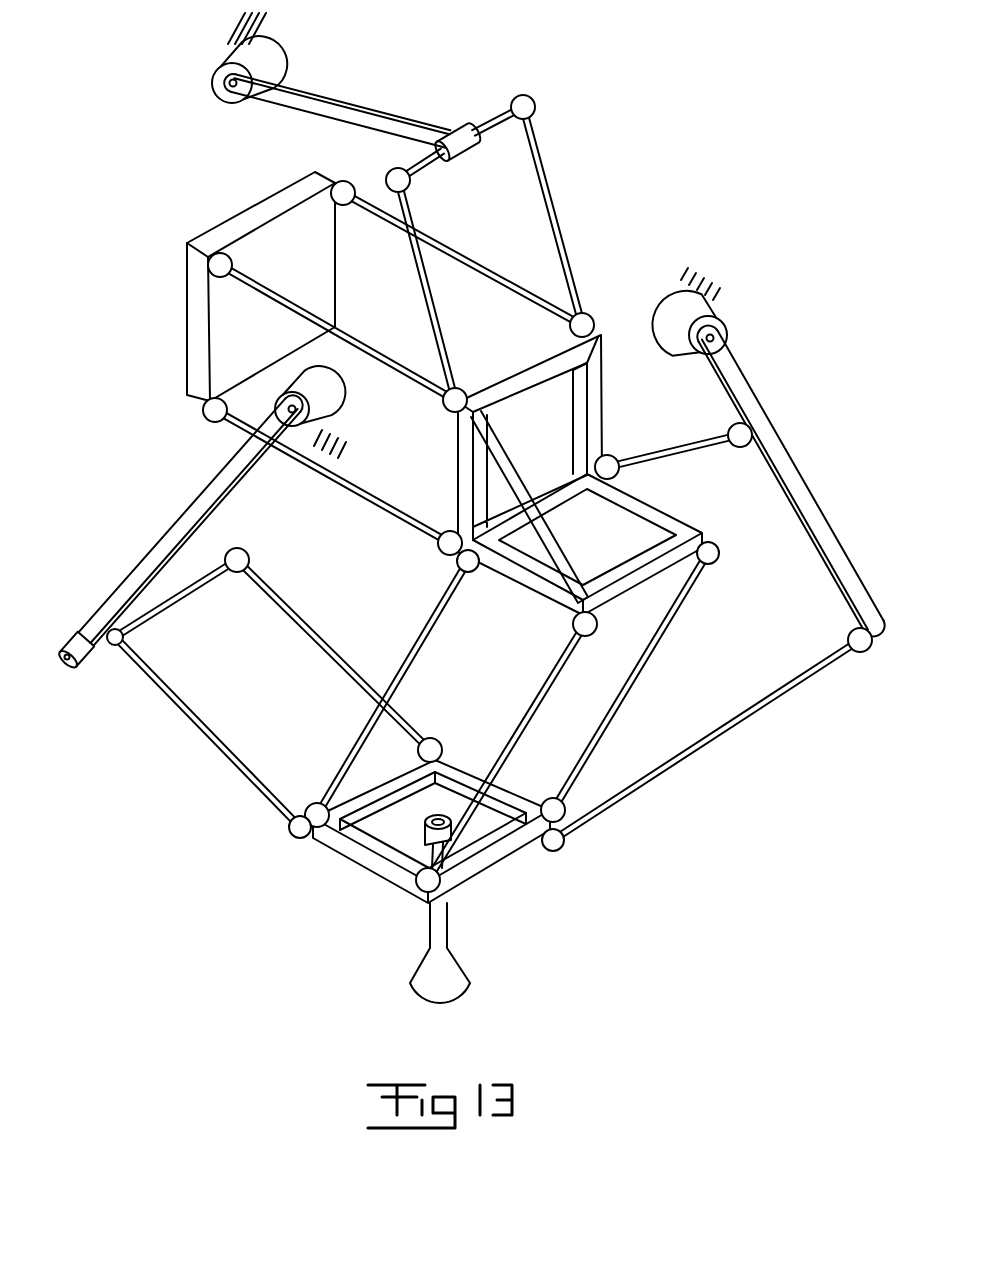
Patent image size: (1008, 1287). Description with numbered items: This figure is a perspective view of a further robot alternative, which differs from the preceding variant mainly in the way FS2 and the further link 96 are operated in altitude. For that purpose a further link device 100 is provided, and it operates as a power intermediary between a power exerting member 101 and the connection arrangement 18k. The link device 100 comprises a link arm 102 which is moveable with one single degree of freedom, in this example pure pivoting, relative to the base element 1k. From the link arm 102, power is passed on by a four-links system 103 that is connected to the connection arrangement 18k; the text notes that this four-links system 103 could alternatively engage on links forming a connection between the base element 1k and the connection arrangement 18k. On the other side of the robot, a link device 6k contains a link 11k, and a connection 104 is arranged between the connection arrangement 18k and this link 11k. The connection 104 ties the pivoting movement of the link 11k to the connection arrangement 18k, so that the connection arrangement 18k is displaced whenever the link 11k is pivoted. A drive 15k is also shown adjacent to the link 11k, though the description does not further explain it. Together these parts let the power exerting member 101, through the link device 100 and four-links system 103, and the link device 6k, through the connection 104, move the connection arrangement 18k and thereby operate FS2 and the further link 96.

The base element 1k is at (232, 31).
The power exerting member 101 is at (268, 67).
The link arm 102 is at (367, 117).
The link device 100 is at (495, 82).
The further link 96 is at (476, 257).
The four-links system 103 is at (572, 243).
The rotary drive 15k is at (712, 303).
The link 11k is at (748, 402).
The connection arrangement 18k is at (593, 412).
The link device 6k is at (840, 510).
The connection 104 is at (687, 451).
The drive arm FS2 is at (341, 513).